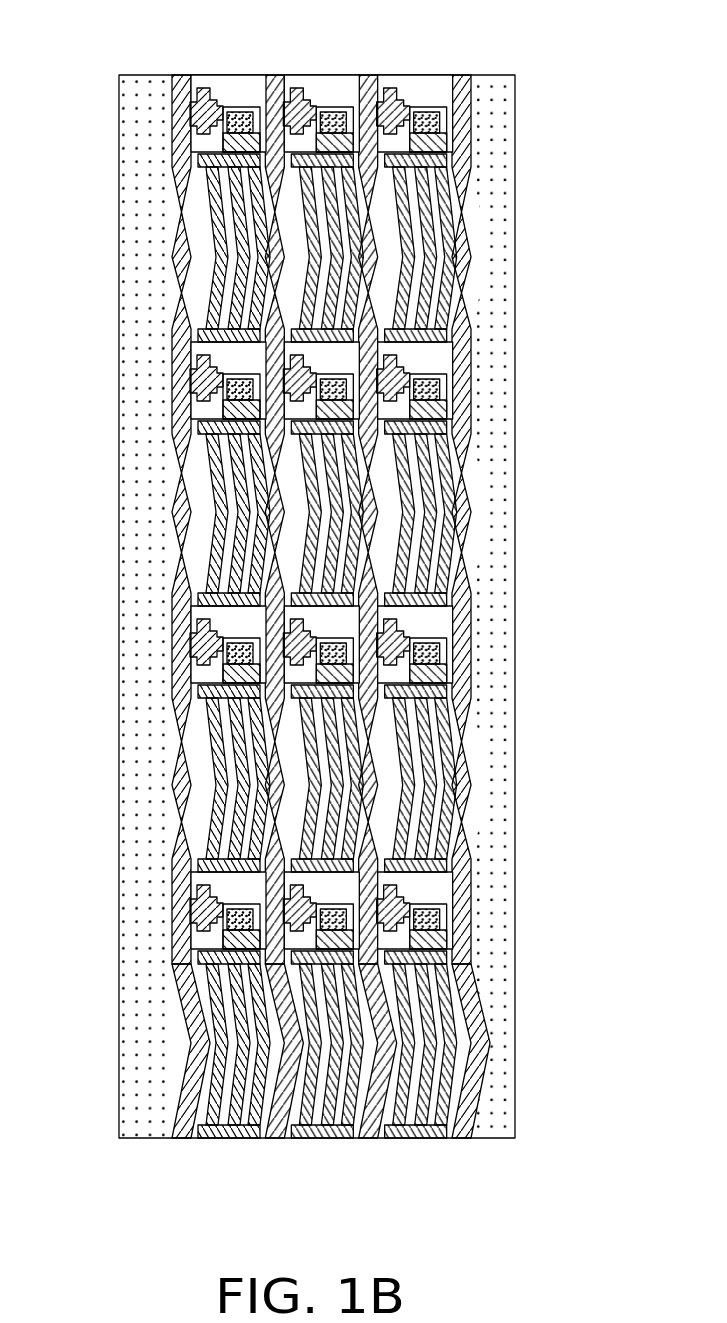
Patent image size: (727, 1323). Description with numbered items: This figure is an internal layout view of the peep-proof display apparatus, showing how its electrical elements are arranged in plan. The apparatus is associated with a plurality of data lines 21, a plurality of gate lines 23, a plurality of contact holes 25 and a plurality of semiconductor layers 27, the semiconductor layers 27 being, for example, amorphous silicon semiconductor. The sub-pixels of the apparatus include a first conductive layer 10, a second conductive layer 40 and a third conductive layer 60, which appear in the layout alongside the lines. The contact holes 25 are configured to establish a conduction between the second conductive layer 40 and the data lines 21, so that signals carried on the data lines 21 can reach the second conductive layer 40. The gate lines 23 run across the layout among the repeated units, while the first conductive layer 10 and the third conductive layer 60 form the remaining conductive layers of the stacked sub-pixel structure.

The first conductive layer 10 is at (138, 665).
The data line 21 is at (183, 1140).
The gate line 23 is at (327, 888).
The contact hole 25 is at (240, 110).
The semiconductor layer 27 is at (190, 77).
The second conductive layer 40 is at (443, 195).
The third conductive layer 60 is at (458, 472).